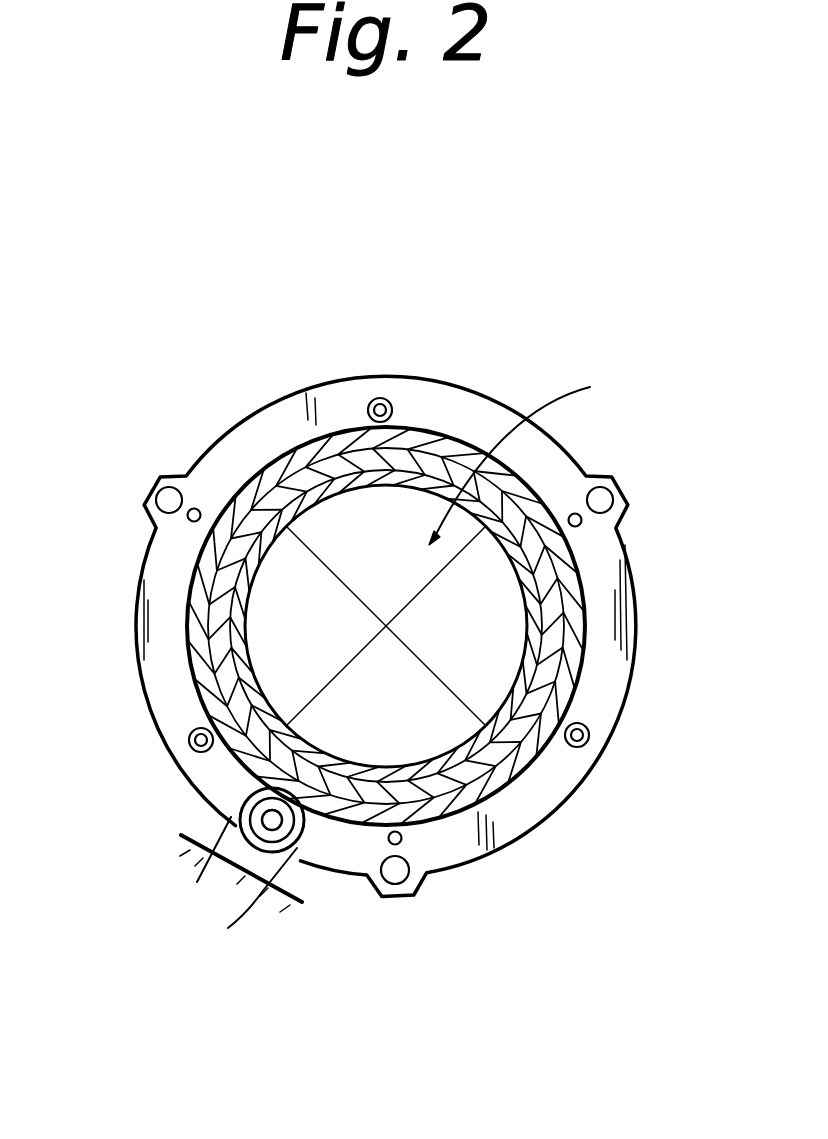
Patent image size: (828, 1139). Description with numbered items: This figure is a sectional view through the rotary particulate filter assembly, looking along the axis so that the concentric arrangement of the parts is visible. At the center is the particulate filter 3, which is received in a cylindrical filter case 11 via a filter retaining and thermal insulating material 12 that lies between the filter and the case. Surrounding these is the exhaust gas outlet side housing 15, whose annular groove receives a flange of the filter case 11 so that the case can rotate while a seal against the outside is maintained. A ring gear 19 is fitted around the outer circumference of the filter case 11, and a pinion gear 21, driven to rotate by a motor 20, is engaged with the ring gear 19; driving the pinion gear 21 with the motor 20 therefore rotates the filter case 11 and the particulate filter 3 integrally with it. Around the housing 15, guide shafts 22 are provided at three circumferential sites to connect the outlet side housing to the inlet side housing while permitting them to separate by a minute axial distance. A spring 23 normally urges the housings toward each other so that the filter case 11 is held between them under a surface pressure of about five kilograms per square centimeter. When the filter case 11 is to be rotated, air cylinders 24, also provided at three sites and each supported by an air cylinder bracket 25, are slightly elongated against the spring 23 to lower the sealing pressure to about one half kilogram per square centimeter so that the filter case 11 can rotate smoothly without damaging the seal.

The particulate filter 3 is at (522, 447).
The filter case 11 is at (538, 740).
The filter retaining and thermal insulating material 12 is at (478, 755).
The exhaust gas outlet side housing 15 is at (482, 405).
The ring gear 19 is at (552, 750).
The motor 20 is at (197, 882).
The pinion gear 21 is at (272, 828).
The guide shaft 22 is at (195, 508).
The spring 23 is at (150, 492).
The air cylinder 24 is at (394, 403).
The air cylinder bracket 25 is at (374, 404).